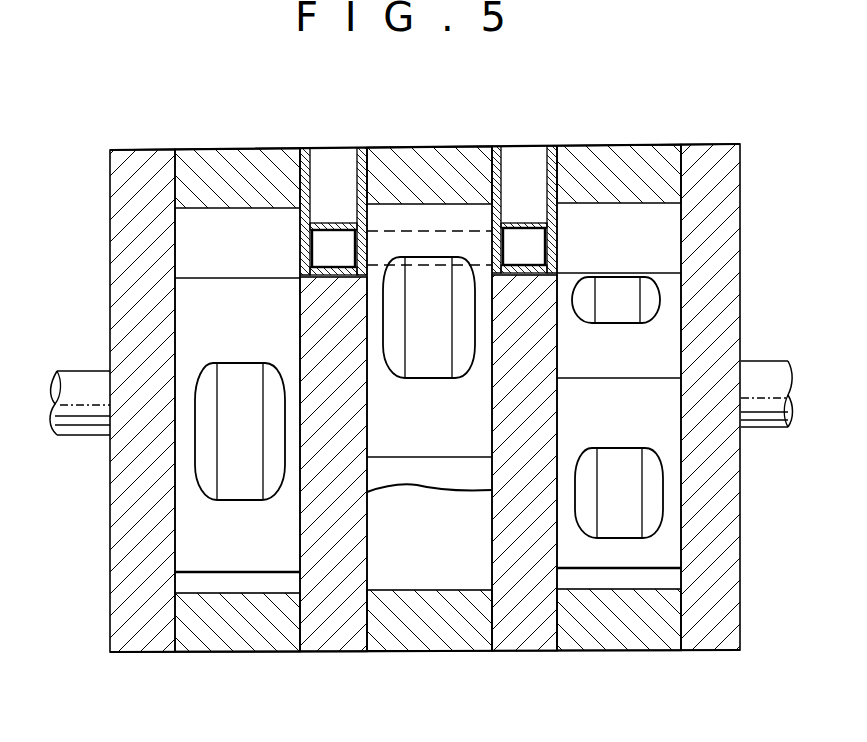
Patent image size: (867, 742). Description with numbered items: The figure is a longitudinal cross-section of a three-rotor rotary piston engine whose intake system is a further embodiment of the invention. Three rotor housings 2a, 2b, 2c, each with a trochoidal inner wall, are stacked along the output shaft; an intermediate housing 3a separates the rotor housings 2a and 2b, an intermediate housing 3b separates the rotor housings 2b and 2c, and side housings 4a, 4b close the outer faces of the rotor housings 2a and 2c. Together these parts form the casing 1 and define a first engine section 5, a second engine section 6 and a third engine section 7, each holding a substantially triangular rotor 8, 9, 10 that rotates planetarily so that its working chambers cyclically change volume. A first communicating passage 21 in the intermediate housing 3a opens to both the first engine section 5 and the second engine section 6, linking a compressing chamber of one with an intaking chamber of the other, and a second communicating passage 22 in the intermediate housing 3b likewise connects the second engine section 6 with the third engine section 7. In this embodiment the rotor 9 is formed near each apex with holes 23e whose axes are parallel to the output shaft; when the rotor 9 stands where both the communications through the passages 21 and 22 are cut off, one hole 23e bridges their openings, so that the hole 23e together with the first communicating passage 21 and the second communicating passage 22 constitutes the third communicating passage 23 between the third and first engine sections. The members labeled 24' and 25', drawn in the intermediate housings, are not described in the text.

The casing 1 is at (150, 128).
The rotor housing 2a is at (280, 632).
The rotor housing 2b is at (467, 628).
The rotor housing 2c is at (653, 627).
The intermediate housing 3a is at (333, 425).
The intermediate housing 3b is at (524, 423).
The side housing 4a is at (152, 632).
The side housing 4b is at (713, 628).
The first engine section 5 is at (219, 663).
The second engine section 6 is at (401, 664).
The third engine section 7 is at (607, 664).
The rotor 8 is at (185, 532).
The rotor 9 is at (442, 492).
The rotor 10 is at (663, 548).
The first communicating passage 21 is at (300, 255).
The second communicating passage 22 is at (557, 248).
The third communicating passage 23 is at (396, 222).
The hole 23e is at (445, 233).
The first valve 24' is at (333, 220).
The second valve 25' is at (524, 219).